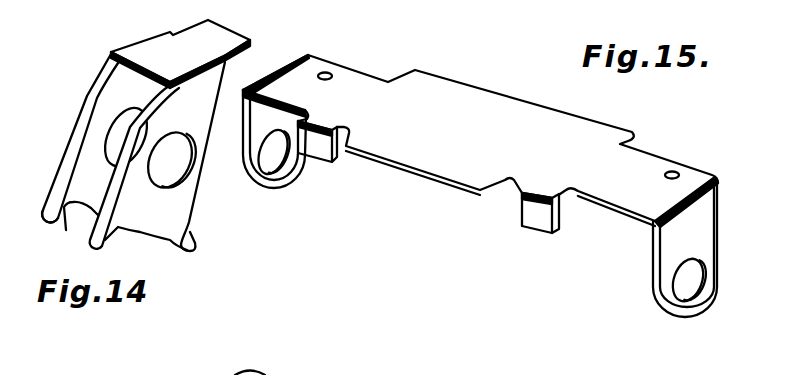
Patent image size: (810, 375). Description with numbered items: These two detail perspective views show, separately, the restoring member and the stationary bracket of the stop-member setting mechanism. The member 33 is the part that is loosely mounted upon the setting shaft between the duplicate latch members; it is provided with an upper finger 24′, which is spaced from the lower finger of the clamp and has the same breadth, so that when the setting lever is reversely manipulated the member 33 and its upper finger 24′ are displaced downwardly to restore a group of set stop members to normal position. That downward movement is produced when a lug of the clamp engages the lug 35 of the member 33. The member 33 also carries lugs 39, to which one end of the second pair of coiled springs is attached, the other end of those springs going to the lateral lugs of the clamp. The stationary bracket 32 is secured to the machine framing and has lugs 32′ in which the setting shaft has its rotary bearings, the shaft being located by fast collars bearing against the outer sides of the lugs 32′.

In FIG. 14, the upper finger 24′ is at (226, 39).
In FIG. 14, the member 33 is at (128, 181).
In FIG. 14, the lug 35 is at (191, 250).
In FIG. 14, the lugs 39 is at (100, 243).
In FIG. 15, the stationary bracket 32 is at (480, 144).
In FIG. 15, the lugs 32′ is at (283, 184).